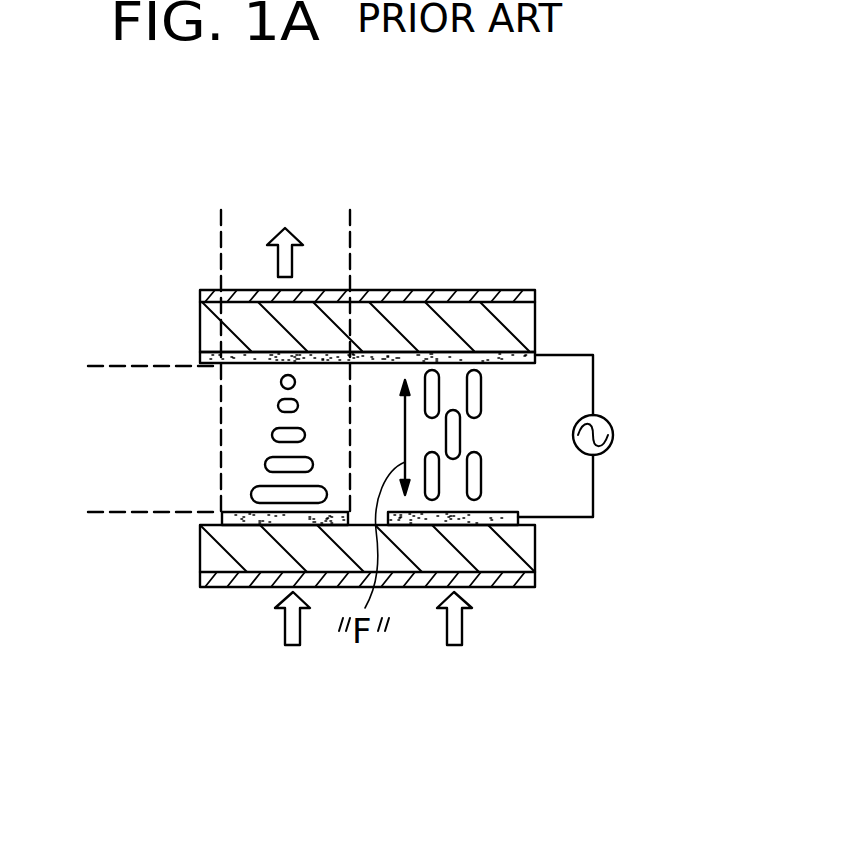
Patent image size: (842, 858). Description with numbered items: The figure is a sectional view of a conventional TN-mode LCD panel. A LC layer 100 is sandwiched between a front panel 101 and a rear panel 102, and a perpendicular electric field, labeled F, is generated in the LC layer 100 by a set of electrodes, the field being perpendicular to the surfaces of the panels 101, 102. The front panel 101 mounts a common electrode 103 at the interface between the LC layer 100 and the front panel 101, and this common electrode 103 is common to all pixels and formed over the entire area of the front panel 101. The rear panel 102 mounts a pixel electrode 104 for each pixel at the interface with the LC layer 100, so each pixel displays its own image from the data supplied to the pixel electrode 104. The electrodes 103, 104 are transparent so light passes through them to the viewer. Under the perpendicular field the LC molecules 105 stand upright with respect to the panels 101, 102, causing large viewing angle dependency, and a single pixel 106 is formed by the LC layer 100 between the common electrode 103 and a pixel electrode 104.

The LC layer 100 is at (88, 366).
The front panel 101 is at (527, 322).
The rear panel 102 is at (518, 542).
The common electrode 103 is at (200, 360).
The pixel electrode 104 is at (222, 523).
The LC molecules 105 is at (480, 395).
The pixel 106 is at (349, 207).